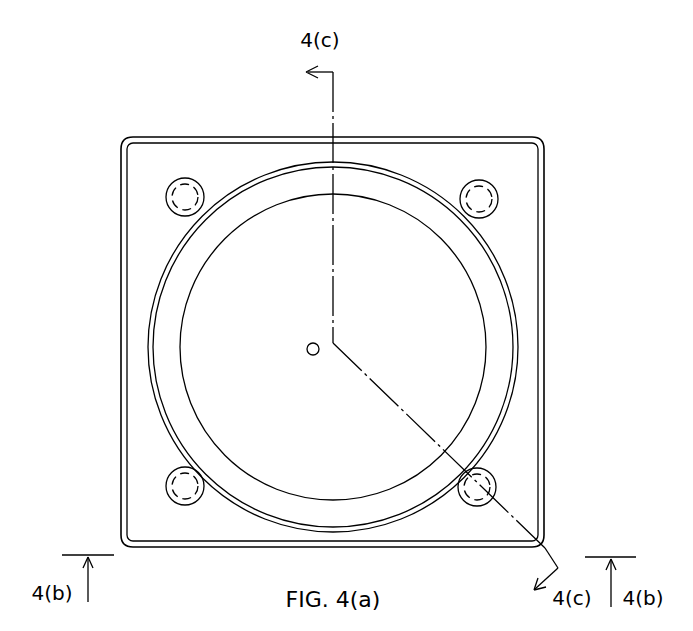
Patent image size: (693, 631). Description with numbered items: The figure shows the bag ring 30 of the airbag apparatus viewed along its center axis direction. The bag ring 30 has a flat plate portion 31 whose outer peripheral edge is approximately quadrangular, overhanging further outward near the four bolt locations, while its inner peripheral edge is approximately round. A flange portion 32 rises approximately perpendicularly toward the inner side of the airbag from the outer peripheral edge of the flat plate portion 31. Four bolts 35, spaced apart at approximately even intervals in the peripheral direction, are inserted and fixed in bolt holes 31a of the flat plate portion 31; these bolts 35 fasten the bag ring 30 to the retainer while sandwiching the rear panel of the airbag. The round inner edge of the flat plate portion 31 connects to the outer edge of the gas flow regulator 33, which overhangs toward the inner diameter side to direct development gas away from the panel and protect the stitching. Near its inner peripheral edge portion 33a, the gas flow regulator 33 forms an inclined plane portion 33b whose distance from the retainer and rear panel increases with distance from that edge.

The bag ring 30 is at (126, 130).
The flat plate portion 31 is at (412, 169).
The bolt holes 31a is at (488, 487).
The flange portion 32 is at (543, 180).
The gas flow regulator 33 is at (473, 251).
The inner peripheral edge portion 33a is at (483, 327).
The inclined plane portion 33b is at (481, 294).
The bolts 35 is at (492, 473).